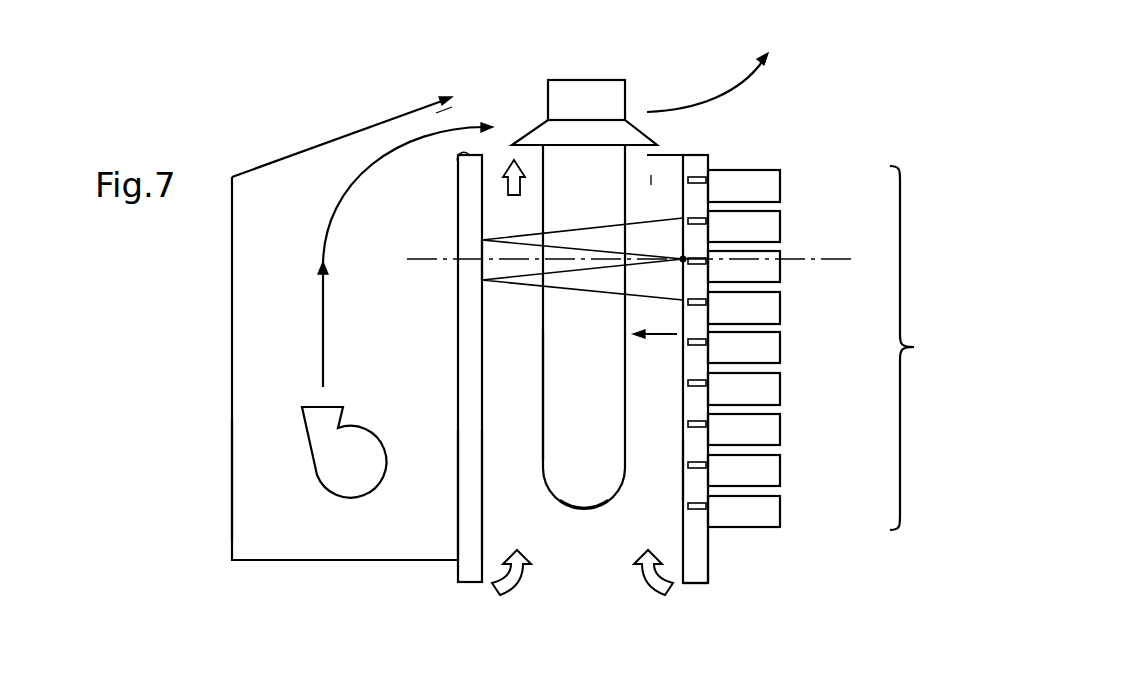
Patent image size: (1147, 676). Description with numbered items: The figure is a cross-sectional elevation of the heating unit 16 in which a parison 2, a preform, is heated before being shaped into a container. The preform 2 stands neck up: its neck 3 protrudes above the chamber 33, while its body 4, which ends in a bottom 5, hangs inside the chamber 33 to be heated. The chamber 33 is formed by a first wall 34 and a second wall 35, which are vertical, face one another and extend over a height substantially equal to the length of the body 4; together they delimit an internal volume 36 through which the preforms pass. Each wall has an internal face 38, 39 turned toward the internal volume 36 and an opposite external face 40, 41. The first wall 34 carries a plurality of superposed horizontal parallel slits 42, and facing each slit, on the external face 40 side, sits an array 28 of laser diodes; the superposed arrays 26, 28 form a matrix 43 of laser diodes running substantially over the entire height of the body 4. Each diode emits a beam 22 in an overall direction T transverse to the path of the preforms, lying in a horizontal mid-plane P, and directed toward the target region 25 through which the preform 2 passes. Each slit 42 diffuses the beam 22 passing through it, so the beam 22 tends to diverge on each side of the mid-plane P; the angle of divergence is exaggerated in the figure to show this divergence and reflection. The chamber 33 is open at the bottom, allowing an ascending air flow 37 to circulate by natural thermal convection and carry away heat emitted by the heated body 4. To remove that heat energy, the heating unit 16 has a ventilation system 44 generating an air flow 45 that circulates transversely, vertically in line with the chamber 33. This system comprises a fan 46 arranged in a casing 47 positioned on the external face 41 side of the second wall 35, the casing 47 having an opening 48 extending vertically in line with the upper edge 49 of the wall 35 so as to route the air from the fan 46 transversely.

The parison 2 is at (529, 438).
The neck 3 is at (594, 78).
The body 4 is at (542, 393).
The bottom 5 is at (595, 512).
The heating unit 16 is at (306, 115).
The beam 22 is at (497, 282).
The target region 25 is at (518, 220).
The sample container 26 is at (760, 183).
The array of laser diodes 28 is at (767, 507).
The chamber 33 is at (722, 148).
The first wall 34 is at (700, 565).
The second wall 35 is at (460, 487).
The internal volume 36 is at (658, 172).
The ascending air flow 37 is at (518, 597).
The internal face 38 is at (682, 486).
The internal face 39 is at (482, 477).
The external face 40 is at (710, 537).
The external face 41 is at (456, 378).
The slits 42 is at (683, 416).
The matrix of laser diodes 43 is at (922, 348).
The ventilation system 44 is at (251, 366).
The air flow 45 is at (470, 118).
The fan 46 is at (318, 472).
The casing 47 is at (230, 472).
The opening 48 is at (443, 113).
The upper edge 49 is at (462, 153).
The horizontal mid-plane P is at (422, 258).
The overall direction T is at (657, 334).